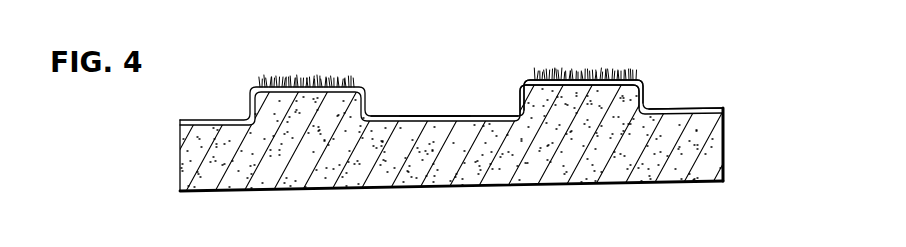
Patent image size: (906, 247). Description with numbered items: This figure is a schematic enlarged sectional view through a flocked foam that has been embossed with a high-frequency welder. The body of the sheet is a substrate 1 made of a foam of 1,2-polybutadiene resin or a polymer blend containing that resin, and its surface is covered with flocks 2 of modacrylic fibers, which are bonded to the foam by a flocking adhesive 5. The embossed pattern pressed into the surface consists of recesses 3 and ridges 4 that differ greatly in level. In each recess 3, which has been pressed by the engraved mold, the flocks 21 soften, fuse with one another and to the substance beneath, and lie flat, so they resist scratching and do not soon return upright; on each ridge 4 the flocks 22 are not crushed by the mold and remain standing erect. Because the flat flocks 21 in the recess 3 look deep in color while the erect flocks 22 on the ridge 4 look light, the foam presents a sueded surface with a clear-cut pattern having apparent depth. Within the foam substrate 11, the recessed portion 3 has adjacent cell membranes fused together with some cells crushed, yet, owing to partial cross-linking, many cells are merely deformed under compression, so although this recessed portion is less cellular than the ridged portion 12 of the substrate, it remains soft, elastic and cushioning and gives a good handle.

The substrate 1 is at (462, 133).
The foam substrate 11 is at (362, 158).
The ridged portion of the substrate 12 is at (578, 98).
The flocks 2 is at (641, 82).
The flocks in the recess 21 is at (470, 113).
The flocks on the ridge 22 is at (577, 68).
The recess 3 is at (435, 108).
The ridge 4 is at (619, 57).
The flocking adhesive 5 is at (698, 118).